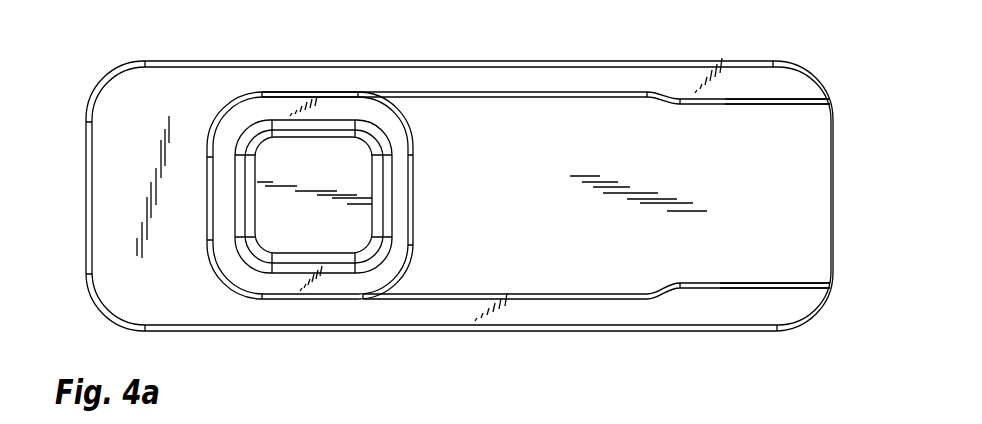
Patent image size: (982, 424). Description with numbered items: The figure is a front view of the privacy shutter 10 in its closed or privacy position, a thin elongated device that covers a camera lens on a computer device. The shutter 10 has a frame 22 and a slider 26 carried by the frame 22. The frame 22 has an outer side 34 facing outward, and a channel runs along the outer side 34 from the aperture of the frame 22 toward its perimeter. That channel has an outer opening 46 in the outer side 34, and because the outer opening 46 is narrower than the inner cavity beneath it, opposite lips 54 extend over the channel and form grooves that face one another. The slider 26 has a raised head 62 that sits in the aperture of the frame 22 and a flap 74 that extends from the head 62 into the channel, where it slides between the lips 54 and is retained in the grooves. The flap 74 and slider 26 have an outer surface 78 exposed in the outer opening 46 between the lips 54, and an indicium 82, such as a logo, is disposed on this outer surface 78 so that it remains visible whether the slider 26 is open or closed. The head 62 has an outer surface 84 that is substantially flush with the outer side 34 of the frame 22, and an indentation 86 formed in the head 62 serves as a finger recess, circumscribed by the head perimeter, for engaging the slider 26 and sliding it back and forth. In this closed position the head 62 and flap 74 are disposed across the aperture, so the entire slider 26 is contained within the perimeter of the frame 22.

The privacy shutter 10 is at (76, 262).
The frame 22 is at (118, 118).
The slider 26 is at (810, 160).
The outer side 34 is at (212, 85).
The outer opening 46 is at (727, 100).
The lips 54 is at (790, 102).
The head 62 is at (375, 272).
The flap 74 is at (757, 245).
The outer surface 78 is at (762, 267).
The indicium 82 is at (753, 180).
The outer surface of the head 84 is at (270, 282).
The indentation 86 is at (322, 160).